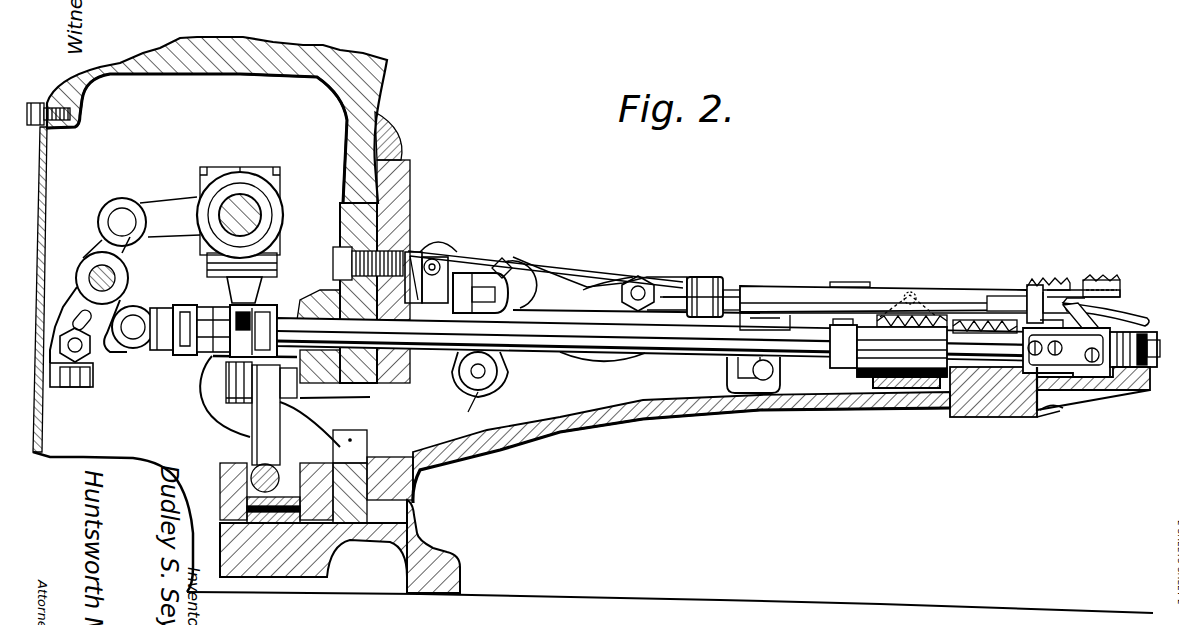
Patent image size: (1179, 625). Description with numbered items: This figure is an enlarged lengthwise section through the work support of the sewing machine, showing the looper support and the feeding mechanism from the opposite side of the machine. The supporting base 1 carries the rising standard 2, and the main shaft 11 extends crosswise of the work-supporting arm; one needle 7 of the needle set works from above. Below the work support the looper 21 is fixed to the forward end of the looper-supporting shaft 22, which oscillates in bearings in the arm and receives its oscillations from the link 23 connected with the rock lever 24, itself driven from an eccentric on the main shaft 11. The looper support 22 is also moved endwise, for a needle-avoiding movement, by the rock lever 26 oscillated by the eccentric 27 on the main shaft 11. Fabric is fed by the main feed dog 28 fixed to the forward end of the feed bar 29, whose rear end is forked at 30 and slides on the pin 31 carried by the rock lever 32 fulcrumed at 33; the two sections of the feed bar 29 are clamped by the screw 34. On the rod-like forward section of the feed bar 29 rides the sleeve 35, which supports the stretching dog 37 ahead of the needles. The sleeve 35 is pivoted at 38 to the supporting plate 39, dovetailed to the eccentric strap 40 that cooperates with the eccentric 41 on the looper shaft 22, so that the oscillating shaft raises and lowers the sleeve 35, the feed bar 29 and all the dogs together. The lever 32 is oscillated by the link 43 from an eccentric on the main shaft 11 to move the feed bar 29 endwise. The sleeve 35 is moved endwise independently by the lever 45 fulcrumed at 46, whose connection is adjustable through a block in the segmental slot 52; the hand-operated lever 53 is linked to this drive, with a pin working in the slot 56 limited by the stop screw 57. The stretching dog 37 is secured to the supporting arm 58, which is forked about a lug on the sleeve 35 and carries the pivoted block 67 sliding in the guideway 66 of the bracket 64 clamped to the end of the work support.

The supporting base 1 is at (432, 563).
The standard 2 is at (357, 133).
The needle 7 is at (850, 398).
The main shaft 11 is at (250, 216).
The looper 21 is at (1088, 312).
The looper-supporting shaft 22 is at (672, 352).
The link 23 is at (232, 360).
The rock lever 24 is at (290, 423).
The rock lever 26 is at (130, 248).
The eccentric 27 is at (262, 228).
The main feed dog 28 is at (1045, 280).
The feed bar 29 is at (997, 296).
The fork 30 is at (495, 277).
The pin 31 is at (473, 292).
The rock lever 32 is at (507, 360).
The fulcrum 33 is at (477, 385).
The screw 34 is at (705, 278).
The sleeve 35 is at (840, 297).
The stretching dog 37 is at (1103, 280).
The pivot 38 is at (915, 300).
The supporting plate 39 is at (890, 385).
The eccentric strap 40 is at (960, 385).
The eccentric 41 is at (880, 350).
The link 43 is at (252, 290).
The lever 45 is at (765, 380).
The fulcrum 46 is at (752, 372).
The segmental slot 52 is at (757, 308).
The hand-operated lever 53 is at (603, 356).
The slot 56 is at (420, 252).
The stop screw 57 is at (440, 257).
The supporting arm 58 is at (1117, 312).
The bracket 64 is at (1115, 394).
The guideway 66 is at (1152, 390).
The pivoted block 67 is at (1140, 332).